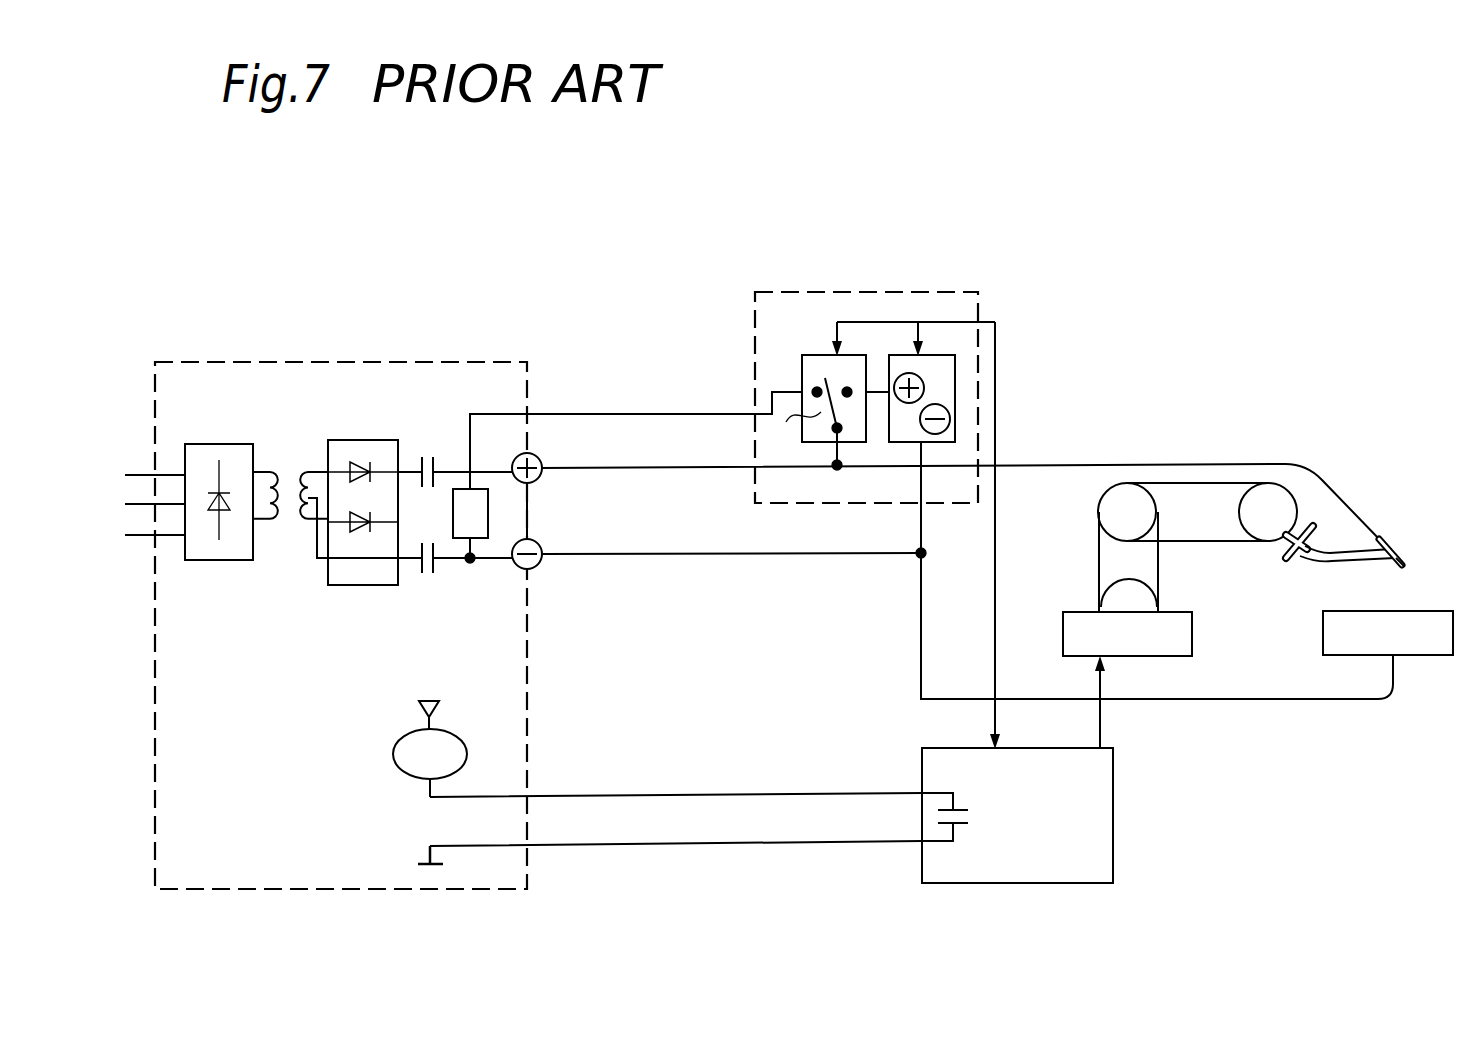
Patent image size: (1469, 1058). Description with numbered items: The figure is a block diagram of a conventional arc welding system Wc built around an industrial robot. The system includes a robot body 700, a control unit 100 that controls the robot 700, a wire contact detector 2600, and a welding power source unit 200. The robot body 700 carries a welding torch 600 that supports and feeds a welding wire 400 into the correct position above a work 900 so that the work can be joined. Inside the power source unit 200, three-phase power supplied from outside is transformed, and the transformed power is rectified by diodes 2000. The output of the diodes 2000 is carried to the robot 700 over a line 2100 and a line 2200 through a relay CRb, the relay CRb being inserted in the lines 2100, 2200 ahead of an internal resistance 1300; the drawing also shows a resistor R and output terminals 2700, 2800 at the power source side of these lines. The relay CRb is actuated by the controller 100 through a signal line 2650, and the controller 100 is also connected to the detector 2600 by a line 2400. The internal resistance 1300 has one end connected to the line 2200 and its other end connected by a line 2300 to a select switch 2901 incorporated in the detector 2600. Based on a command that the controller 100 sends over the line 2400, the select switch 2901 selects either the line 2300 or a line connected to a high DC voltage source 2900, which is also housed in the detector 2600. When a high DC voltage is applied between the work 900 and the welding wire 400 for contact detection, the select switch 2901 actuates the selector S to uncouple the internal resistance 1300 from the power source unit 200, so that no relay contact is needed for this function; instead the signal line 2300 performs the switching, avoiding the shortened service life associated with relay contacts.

The welding system Wc is at (1198, 244).
The welding power source unit 200 is at (529, 366).
The diodes 2000 is at (362, 586).
The resistor R is at (470, 515).
The relay CRb is at (430, 749).
The internal resistance 1300 is at (490, 517).
The positive output terminal 2700 is at (542, 459).
The negative output terminal 2800 is at (540, 567).
The line 2300 is at (682, 414).
The line 2100 is at (684, 470).
The line 2200 is at (684, 557).
The wire contact detector 2600 is at (912, 292).
The select switch 2901 is at (815, 353).
The selector S is at (797, 434).
The high DC voltage source 2900 is at (956, 378).
The line 2400 is at (997, 412).
The signal line 2650 is at (686, 796).
The control unit 100 is at (921, 762).
The robot body 700 is at (1223, 544).
The work 900 is at (1323, 632).
The welding torch 600 is at (1390, 540).
The welding wire 400 is at (1406, 566).